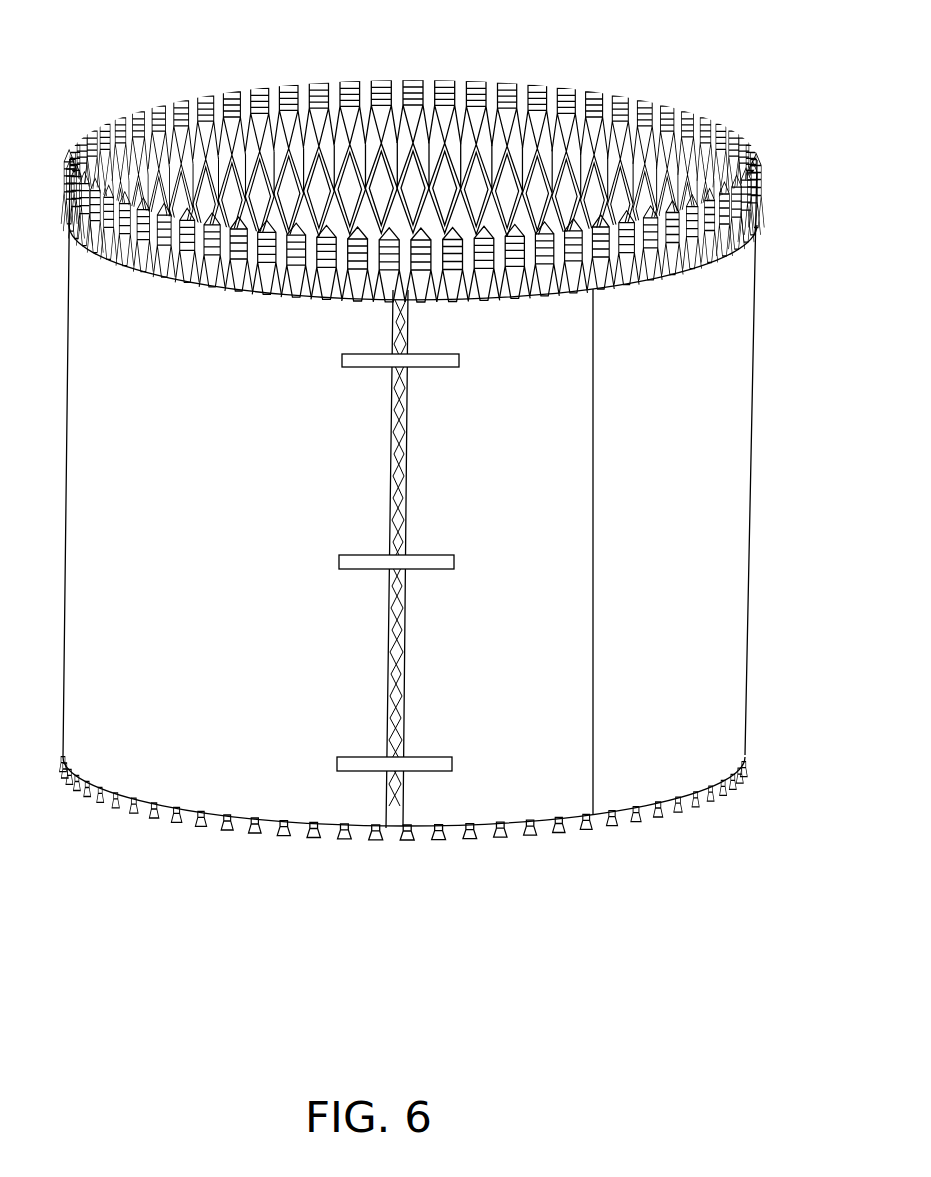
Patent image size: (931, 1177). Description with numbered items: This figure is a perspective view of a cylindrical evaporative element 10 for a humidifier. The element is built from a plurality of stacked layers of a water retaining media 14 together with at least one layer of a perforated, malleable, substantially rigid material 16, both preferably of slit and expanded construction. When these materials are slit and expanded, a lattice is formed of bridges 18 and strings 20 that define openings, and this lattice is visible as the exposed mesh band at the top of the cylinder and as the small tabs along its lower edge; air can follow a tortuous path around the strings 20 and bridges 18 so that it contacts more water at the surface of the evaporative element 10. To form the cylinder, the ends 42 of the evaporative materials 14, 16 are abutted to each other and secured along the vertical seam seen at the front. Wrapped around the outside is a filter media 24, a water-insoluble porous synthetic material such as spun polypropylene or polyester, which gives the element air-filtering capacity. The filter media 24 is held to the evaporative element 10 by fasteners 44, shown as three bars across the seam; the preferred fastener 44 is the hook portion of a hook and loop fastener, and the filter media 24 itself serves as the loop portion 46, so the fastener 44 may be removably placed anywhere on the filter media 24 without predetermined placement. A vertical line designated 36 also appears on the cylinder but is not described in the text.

The evaporative element 10 is at (412, 476).
The water retaining media 14 is at (372, 82).
The substantially rigid material 16 is at (290, 88).
The bridges 18 is at (673, 118).
The strings 20 is at (262, 292).
The filter media 24 is at (200, 594).
The seam line 36 is at (595, 672).
The ends 42 is at (387, 722).
The fasteners 44 is at (443, 367).
The loop portion 46 is at (368, 511).